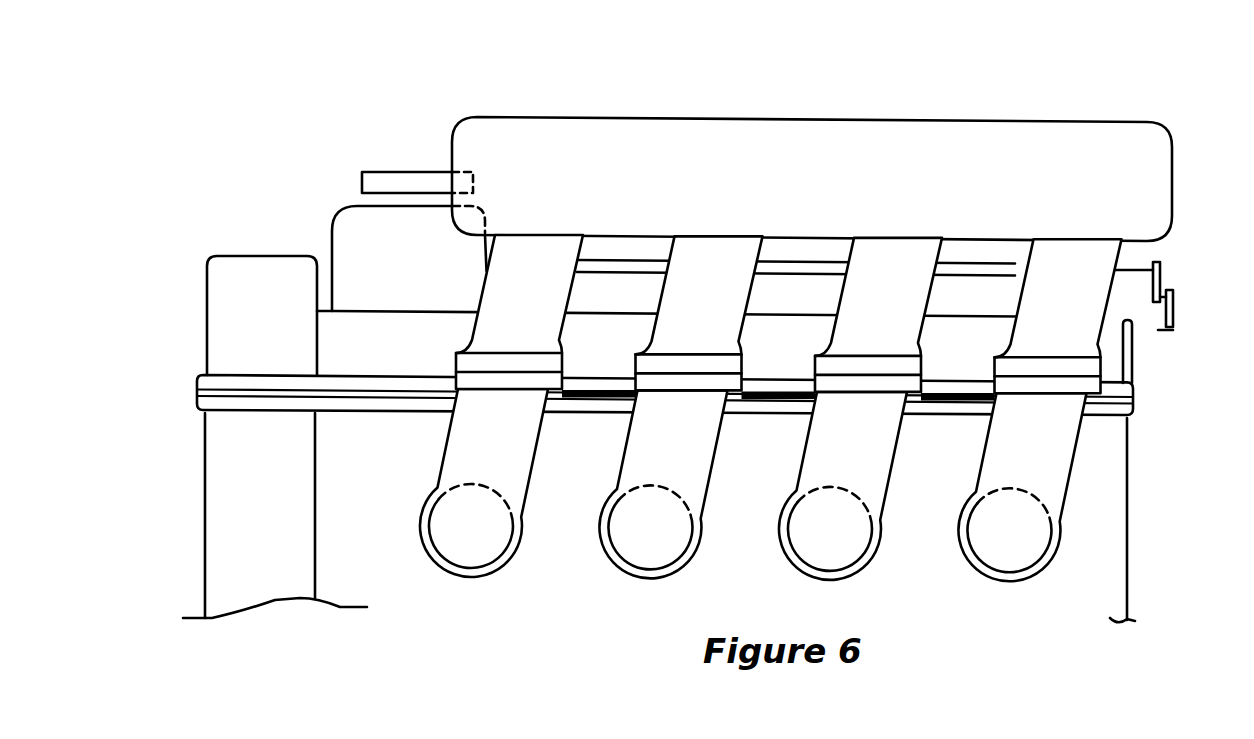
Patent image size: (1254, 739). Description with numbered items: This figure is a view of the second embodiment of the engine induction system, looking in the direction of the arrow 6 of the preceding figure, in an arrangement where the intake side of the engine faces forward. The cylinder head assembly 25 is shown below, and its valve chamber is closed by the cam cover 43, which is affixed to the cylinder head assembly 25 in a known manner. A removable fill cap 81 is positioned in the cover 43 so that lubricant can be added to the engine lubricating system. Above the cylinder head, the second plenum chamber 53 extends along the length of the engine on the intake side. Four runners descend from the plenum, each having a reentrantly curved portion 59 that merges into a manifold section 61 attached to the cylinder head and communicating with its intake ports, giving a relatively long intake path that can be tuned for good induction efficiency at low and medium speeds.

The arrow 6 is at (175, 390).
The cylinder head assembly 25 is at (220, 510).
The cam cover 43 is at (222, 299).
The second plenum chamber 53 is at (817, 132).
The reentrantly curved portion 59 is at (547, 320).
The manifold section 61 is at (518, 462).
The fill cap 81 is at (407, 179).